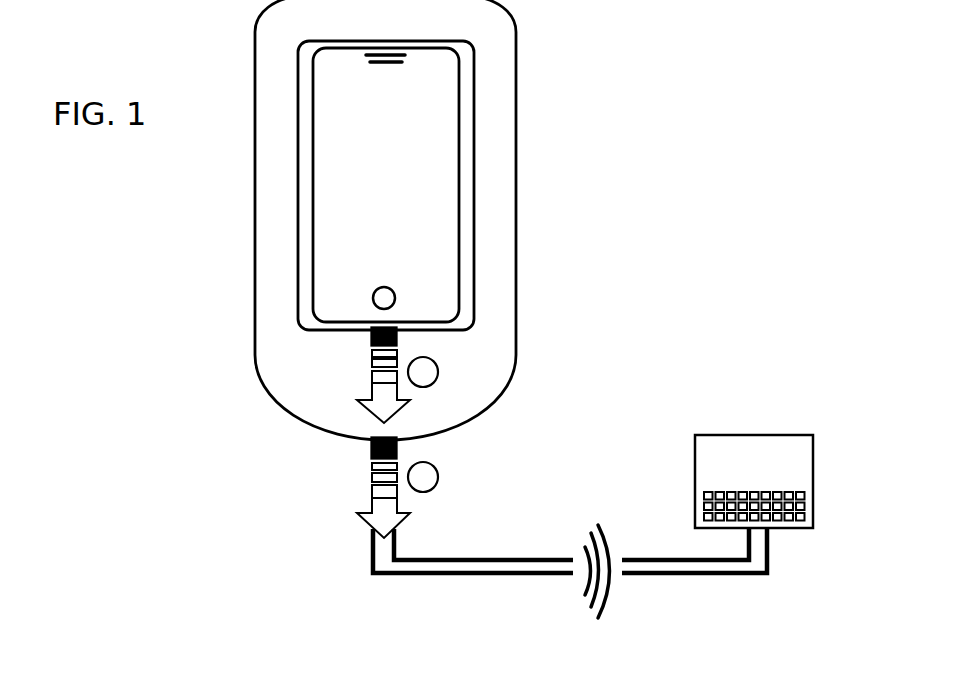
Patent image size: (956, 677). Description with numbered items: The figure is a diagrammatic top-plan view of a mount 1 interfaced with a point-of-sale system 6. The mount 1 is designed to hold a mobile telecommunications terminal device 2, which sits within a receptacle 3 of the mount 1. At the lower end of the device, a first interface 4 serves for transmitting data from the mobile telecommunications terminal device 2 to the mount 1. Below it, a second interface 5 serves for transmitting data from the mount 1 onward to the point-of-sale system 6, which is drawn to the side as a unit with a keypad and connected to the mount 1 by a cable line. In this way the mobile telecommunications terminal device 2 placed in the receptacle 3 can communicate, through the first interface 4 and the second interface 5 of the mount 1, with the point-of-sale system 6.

The mount 1 is at (302, 372).
The mobile telecommunications terminal device 2 is at (423, 190).
The receptacle 3 is at (305, 226).
The first interface 4 is at (397, 334).
The second interface 5 is at (397, 450).
The point-of-sale system 6 is at (738, 460).